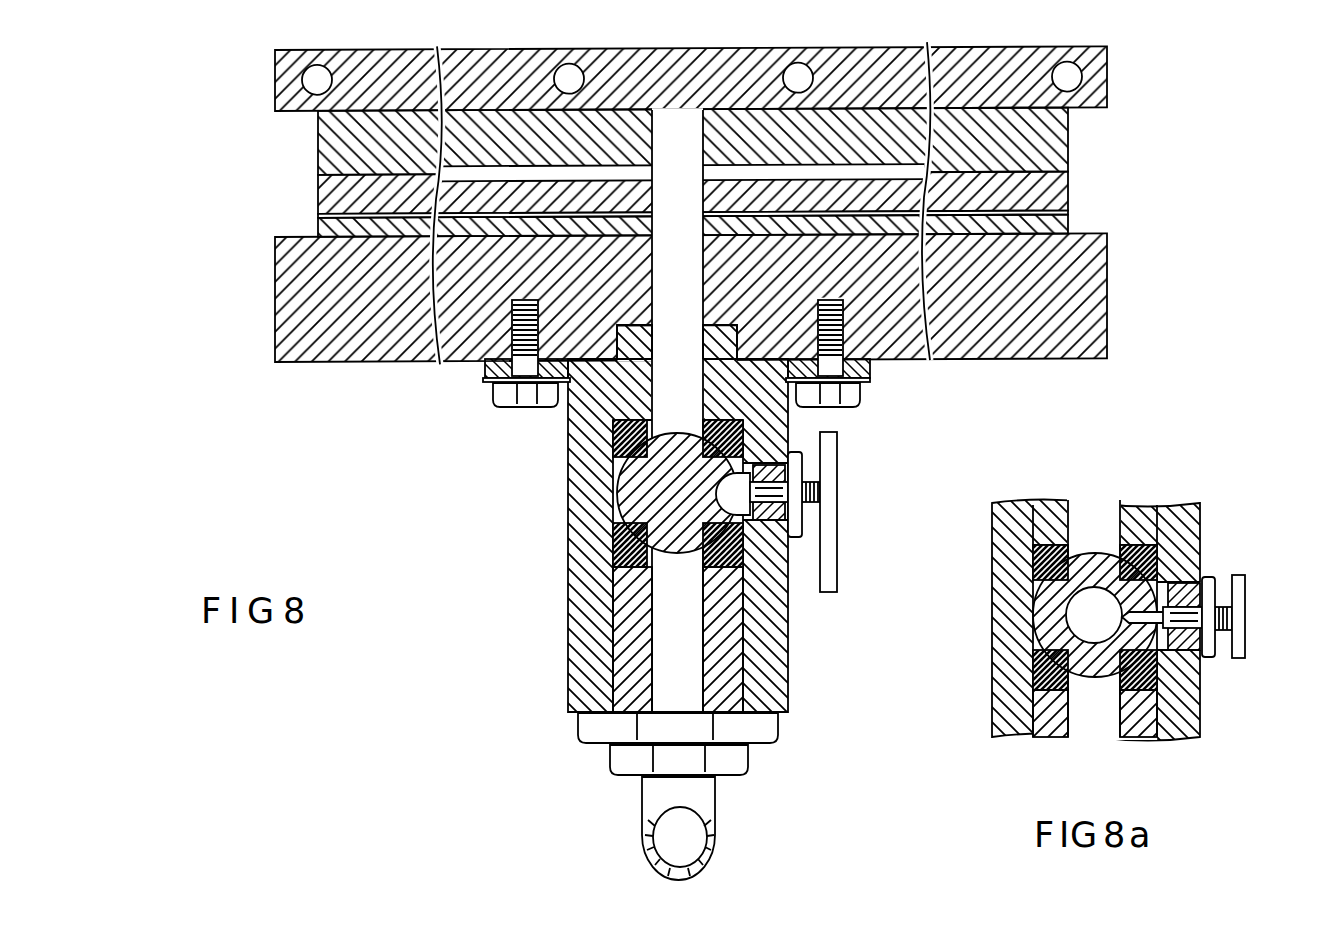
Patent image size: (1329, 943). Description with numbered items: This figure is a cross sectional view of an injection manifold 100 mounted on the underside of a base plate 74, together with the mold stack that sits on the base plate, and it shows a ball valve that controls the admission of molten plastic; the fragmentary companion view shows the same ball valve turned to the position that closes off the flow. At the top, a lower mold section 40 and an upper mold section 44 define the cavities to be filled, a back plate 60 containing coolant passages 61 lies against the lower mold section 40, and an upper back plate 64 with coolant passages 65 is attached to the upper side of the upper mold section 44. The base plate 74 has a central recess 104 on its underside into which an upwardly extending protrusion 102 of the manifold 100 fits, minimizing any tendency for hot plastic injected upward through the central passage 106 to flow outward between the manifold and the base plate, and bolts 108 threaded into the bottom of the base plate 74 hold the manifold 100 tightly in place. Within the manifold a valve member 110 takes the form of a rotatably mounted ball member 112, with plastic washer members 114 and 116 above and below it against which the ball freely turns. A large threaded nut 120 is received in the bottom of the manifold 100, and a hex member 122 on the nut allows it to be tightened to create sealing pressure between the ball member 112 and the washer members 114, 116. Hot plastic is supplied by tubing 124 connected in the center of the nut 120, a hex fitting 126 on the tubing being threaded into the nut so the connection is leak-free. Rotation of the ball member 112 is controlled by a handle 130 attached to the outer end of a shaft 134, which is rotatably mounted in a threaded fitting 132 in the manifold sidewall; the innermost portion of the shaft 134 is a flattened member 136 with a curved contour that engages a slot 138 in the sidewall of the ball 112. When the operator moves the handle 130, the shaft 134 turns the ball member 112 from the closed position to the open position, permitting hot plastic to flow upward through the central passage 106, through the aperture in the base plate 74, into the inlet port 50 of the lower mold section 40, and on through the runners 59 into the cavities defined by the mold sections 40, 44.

In FIG. 8, the lower mold section 40 is at (1066, 185).
In FIG. 8, the upper mold section 44 is at (1062, 145).
In FIG. 8, the inlet port 50 is at (685, 220).
In FIG. 8, the runners 59 is at (530, 177).
In FIG. 8, the back plate 60 is at (1070, 221).
In FIG. 8, the passages 61 is at (1048, 208).
In FIG. 8, the upper back plate 64 is at (1098, 62).
In FIG. 8, the passages 65 is at (308, 84).
In FIG. 8, the base plate 74 is at (1103, 294).
In FIG. 8, the injection manifold 100 is at (568, 610).
In FIG. 8A, the injection manifold 100 is at (997, 562).
In FIG. 8, the upwardly extending protrusion 102 is at (795, 400).
In FIG. 8, the central recess 104 is at (716, 356).
In FIG. 8, the central passage 106 is at (670, 348).
In FIG. 8A, the central passage 106 is at (1098, 517).
In FIG. 8, the bolts 108 is at (494, 403).
In FIG. 8, the valve member 110 is at (348, 453).
In FIG. 8, the ball member 112 is at (620, 520).
In FIG. 8A, the ball member 112 is at (1037, 611).
In FIG. 8, the washer member 114 is at (617, 456).
In FIG. 8A, the washer member 114 is at (1047, 547).
In FIG. 8, the washer member 116 is at (615, 562).
In FIG. 8A, the washer member 116 is at (1035, 673).
In FIG. 8, the threaded nut 120 is at (752, 682).
In FIG. 8A, the threaded nut 120 is at (1053, 727).
In FIG. 8, the hex member 122 is at (582, 744).
In FIG. 8, the tubing 124 is at (655, 831).
In FIG. 8, the hex fitting 126 is at (617, 773).
In FIG. 8, the handle 130 is at (838, 462).
In FIG. 8A, the handle 130 is at (1245, 608).
In FIG. 8, the threaded fitting 132 is at (802, 537).
In FIG. 8A, the threaded fitting 132 is at (1202, 654).
In FIG. 8, the shaft 134 is at (808, 488).
In FIG. 8A, the shaft 134 is at (1177, 607).
In FIG. 8, the flattened member 136 is at (714, 478).
In FIG. 8A, the flattened member 136 is at (1115, 678).
In FIG. 8A, the slot 138 is at (1160, 588).